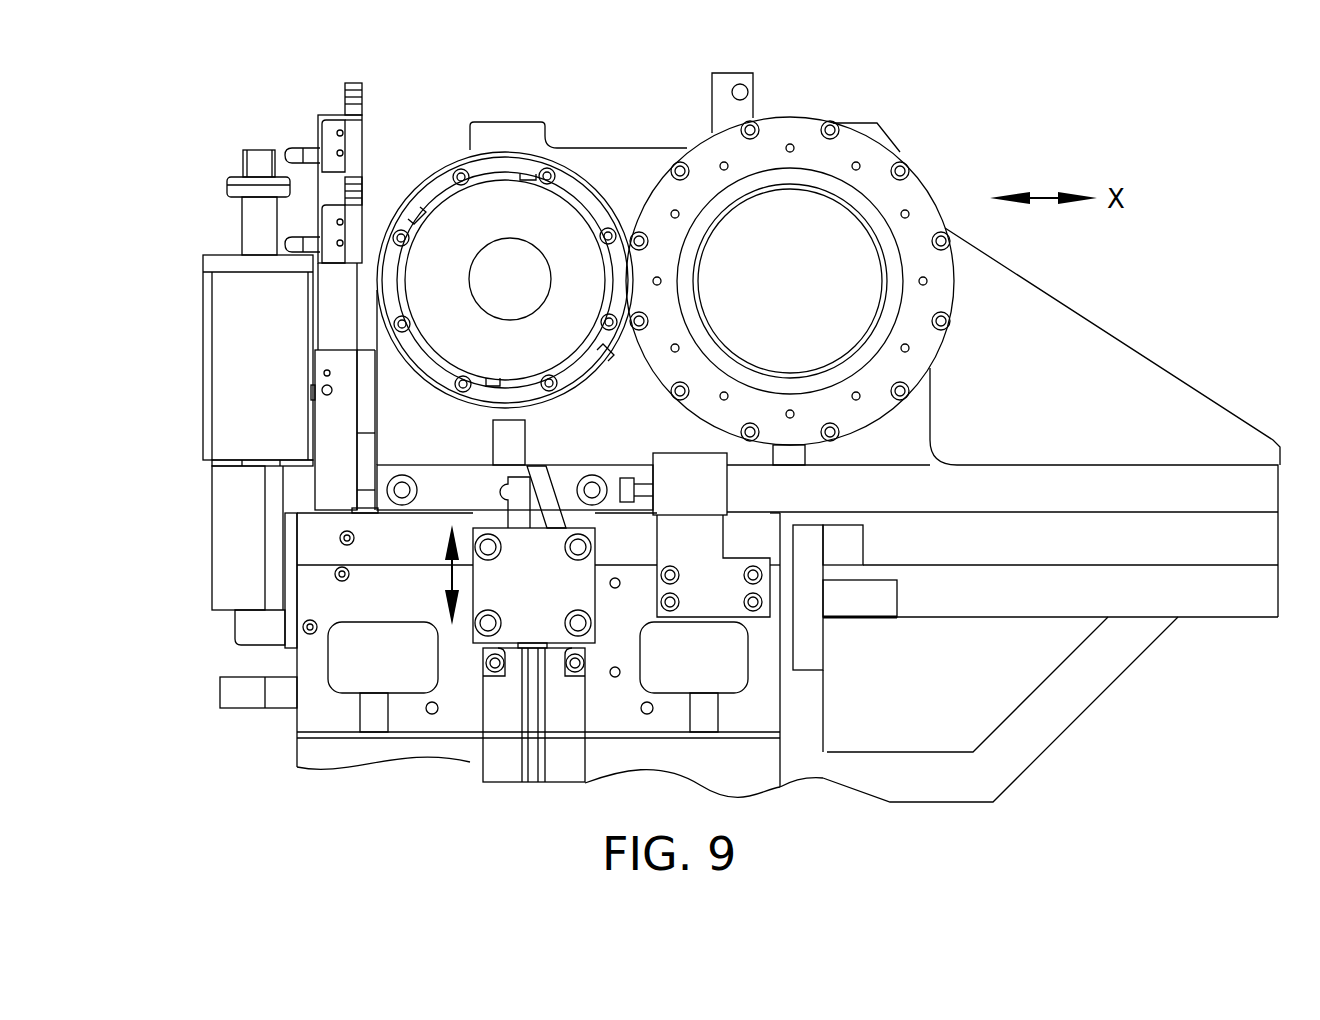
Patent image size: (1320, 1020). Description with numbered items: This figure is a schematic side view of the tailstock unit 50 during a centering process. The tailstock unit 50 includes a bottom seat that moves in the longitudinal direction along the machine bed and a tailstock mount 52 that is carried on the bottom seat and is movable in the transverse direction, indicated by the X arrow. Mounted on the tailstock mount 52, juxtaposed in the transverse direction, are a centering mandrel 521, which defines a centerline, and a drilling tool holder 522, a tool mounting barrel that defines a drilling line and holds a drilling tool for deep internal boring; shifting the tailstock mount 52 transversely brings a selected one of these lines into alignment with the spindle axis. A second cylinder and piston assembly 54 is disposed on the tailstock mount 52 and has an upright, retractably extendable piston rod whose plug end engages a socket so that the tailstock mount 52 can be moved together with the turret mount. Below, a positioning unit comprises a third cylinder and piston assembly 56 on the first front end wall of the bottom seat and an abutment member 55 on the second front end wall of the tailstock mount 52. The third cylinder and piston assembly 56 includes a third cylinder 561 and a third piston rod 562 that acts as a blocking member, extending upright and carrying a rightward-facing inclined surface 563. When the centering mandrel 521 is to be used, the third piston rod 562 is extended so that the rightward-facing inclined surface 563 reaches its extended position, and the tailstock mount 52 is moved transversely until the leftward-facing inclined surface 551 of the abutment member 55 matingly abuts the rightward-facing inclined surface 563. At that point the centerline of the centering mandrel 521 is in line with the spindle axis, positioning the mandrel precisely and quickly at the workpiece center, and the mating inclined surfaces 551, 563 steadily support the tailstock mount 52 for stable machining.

The tailstock unit 50 is at (1168, 332).
The tailstock mount 52 is at (1062, 340).
The centering mandrel 521 is at (515, 280).
The drilling tool holder 522 is at (823, 237).
The second cylinder and piston assembly 54 is at (233, 393).
The abutment member 55 is at (567, 468).
The leftward-facing inclined surface 551 is at (553, 493).
The third cylinder and piston assembly 56 is at (483, 708).
The third cylinder 561 is at (500, 763).
The third piston rod 562 is at (523, 503).
The rightward-facing inclined surface 563 is at (555, 497).